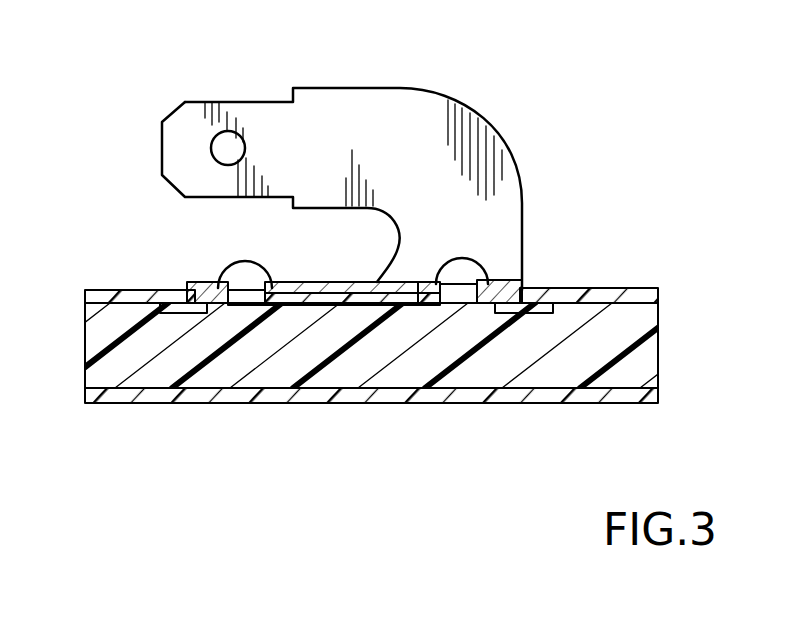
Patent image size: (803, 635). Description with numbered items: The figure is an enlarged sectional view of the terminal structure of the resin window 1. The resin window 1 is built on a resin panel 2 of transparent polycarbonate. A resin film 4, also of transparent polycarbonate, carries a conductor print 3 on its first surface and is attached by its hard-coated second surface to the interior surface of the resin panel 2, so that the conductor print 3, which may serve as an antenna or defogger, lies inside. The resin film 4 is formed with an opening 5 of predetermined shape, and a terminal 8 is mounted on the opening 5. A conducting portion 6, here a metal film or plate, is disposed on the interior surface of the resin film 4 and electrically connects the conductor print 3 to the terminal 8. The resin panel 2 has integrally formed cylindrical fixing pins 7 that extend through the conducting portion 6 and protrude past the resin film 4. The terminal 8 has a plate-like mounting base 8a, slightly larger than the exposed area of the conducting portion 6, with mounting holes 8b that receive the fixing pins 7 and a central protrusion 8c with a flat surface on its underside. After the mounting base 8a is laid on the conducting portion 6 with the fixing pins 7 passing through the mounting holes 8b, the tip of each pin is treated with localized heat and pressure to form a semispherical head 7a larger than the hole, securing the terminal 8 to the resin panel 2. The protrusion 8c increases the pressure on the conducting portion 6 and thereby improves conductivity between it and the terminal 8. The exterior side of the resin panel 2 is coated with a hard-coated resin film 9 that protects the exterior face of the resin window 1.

The resin window 1 is at (626, 288).
The resin panel 2 is at (288, 373).
The conductor print 3 is at (117, 288).
The resin film 4 is at (571, 288).
The opening 5 is at (205, 288).
The conducting portion 6 is at (418, 305).
The fixing pins 7 is at (244, 297).
The semispherical head 7a is at (247, 262).
The terminal 8 is at (438, 90).
The mounting base 8a is at (325, 282).
The mounting holes 8b is at (482, 257).
The central protrusion 8c is at (346, 303).
The resin film 9 is at (150, 403).